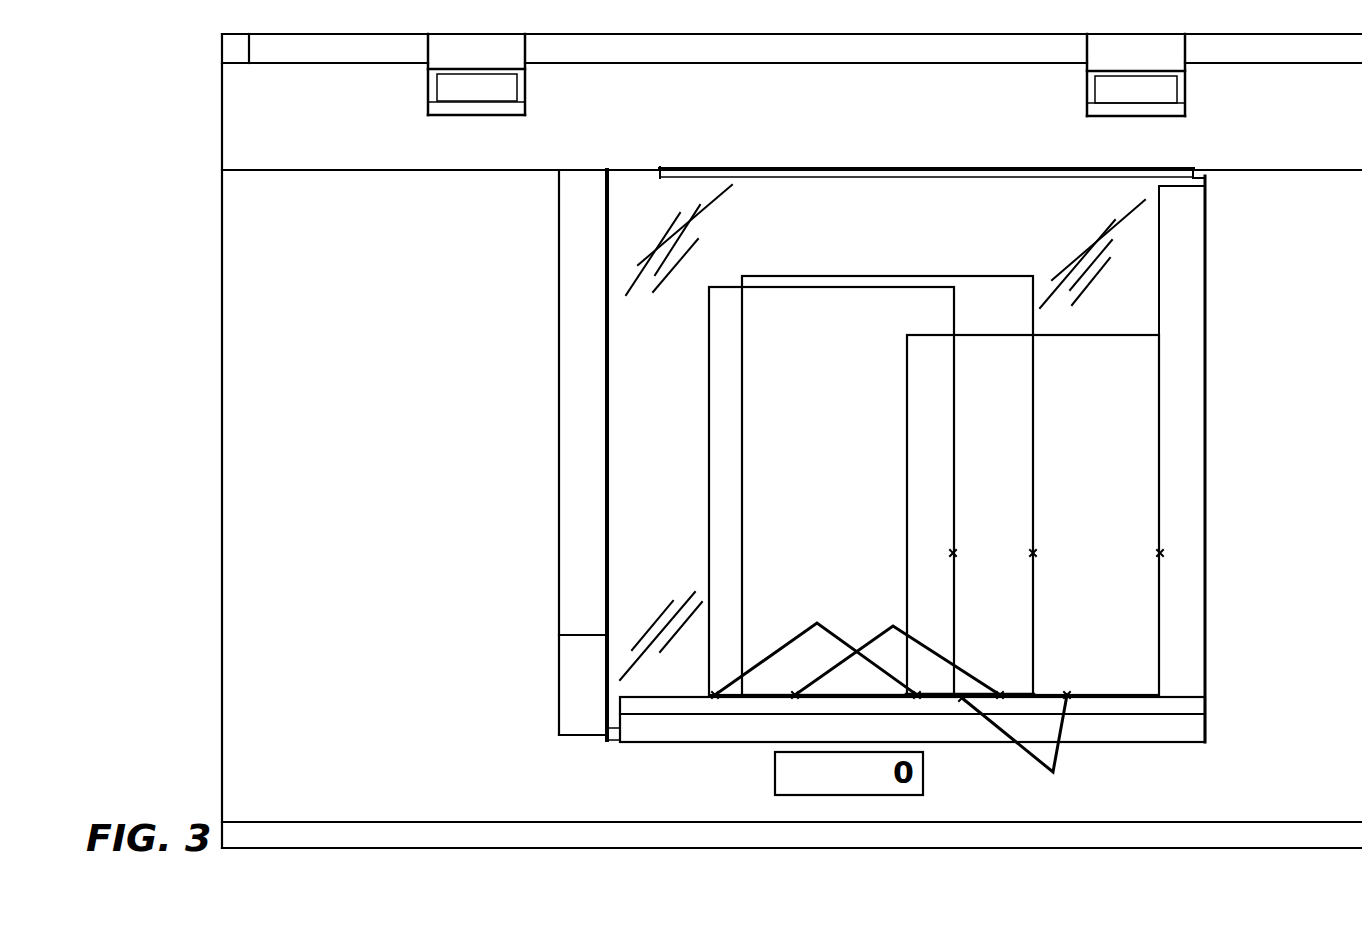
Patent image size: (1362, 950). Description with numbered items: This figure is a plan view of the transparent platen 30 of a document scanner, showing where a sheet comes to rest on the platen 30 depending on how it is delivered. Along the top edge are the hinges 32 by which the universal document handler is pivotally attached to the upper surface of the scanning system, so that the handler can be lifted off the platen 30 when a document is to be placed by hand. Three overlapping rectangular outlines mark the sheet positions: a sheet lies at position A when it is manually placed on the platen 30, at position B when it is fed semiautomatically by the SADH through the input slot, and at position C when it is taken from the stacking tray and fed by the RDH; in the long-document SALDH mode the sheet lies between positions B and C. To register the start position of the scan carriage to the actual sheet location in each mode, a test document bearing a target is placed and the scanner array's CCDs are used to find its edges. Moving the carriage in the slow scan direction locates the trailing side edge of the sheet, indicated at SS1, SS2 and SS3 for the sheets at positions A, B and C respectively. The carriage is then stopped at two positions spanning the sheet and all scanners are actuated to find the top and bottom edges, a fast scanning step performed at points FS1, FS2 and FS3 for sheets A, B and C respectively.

The platen 30 is at (634, 446).
The hinges 32 is at (512, 85).
The position A is at (1068, 335).
The position B is at (887, 275).
The position C is at (775, 285).
The trailing side edge of sheet at position A SS1 is at (1160, 553).
The trailing side edge of sheet at position B SS2 is at (1033, 553).
The trailing side edge of sheet at position C SS3 is at (953, 553).
The fast scan points for sheet A FS1 is at (1053, 772).
The fast scan points for sheet B FS2 is at (893, 626).
The fast scan points for sheet C FS3 is at (817, 623).